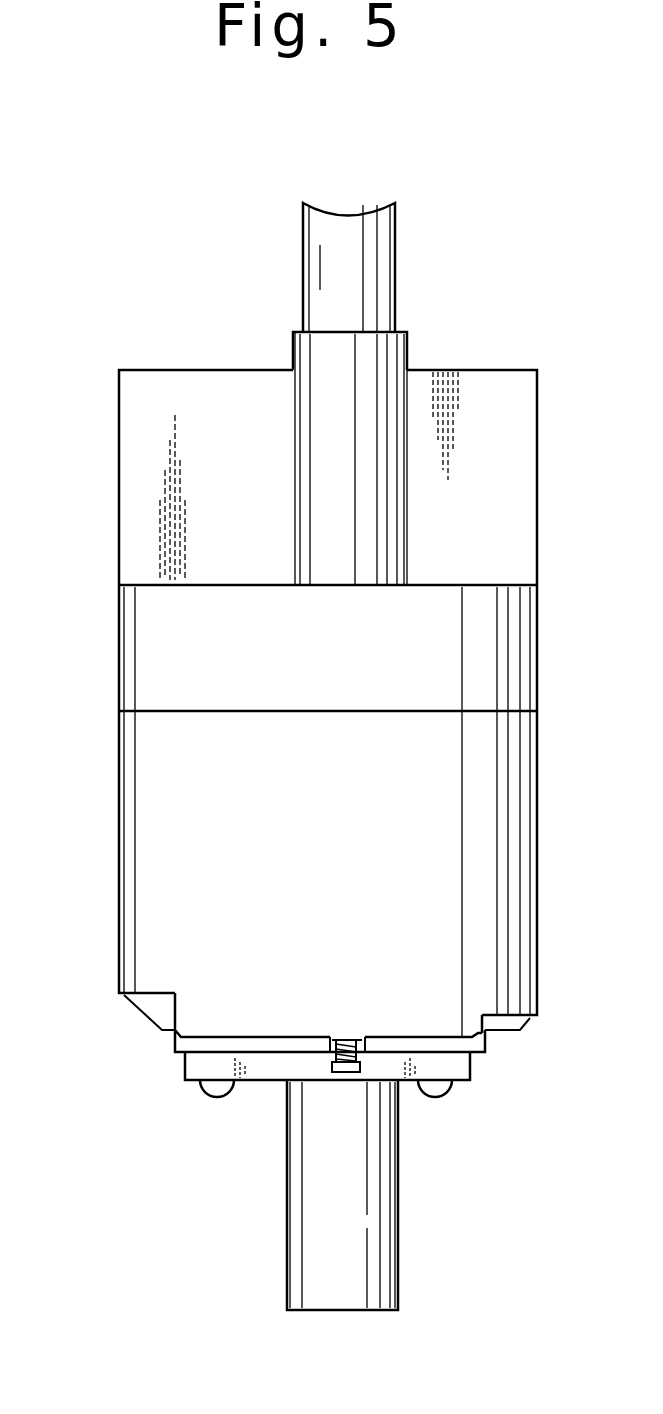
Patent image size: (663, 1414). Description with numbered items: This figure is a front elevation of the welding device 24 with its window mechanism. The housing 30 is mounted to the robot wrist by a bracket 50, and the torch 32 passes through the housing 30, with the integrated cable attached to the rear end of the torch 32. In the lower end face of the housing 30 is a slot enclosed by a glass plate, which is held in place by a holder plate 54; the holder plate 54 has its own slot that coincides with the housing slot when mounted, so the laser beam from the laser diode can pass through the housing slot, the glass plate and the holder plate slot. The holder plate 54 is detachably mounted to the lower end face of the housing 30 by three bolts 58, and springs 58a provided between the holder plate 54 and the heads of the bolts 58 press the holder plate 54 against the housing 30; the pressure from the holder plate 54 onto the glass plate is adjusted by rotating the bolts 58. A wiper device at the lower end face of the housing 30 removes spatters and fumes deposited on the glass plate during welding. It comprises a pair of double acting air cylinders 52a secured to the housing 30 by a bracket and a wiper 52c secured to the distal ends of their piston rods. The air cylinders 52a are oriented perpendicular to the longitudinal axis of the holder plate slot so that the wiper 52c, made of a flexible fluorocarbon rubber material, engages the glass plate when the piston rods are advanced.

The motor assembly 24 is at (92, 305).
The torch 32 is at (396, 268).
The bracket 50 is at (119, 452).
The housing 30 is at (119, 790).
The holder plate 54 is at (232, 1040).
The wiper 52c is at (182, 1065).
The double acting air cylinders 52a is at (216, 1093).
The bolts 58 is at (343, 1075).
The springs 58a is at (370, 1040).